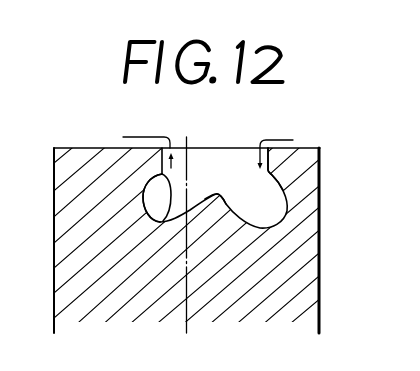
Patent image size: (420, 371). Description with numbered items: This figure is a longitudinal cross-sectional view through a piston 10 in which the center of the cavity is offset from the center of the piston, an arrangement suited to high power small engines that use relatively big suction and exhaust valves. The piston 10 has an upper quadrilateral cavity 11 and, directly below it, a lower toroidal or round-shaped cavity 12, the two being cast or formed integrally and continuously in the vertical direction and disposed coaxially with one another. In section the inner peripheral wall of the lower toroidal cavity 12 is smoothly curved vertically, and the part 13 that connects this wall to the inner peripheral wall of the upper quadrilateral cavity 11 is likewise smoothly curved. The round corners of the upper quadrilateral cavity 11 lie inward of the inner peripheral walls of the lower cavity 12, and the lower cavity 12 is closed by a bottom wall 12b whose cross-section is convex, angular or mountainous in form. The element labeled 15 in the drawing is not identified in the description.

The piston 10 is at (322, 151).
The upper quadrilateral cavity 11 is at (268, 173).
The lower toroidal cavity 12 is at (273, 209).
The bottom wall 12b is at (218, 198).
The connecting part 13 is at (152, 215).
The wall of circular recess 15 is at (136, 195).